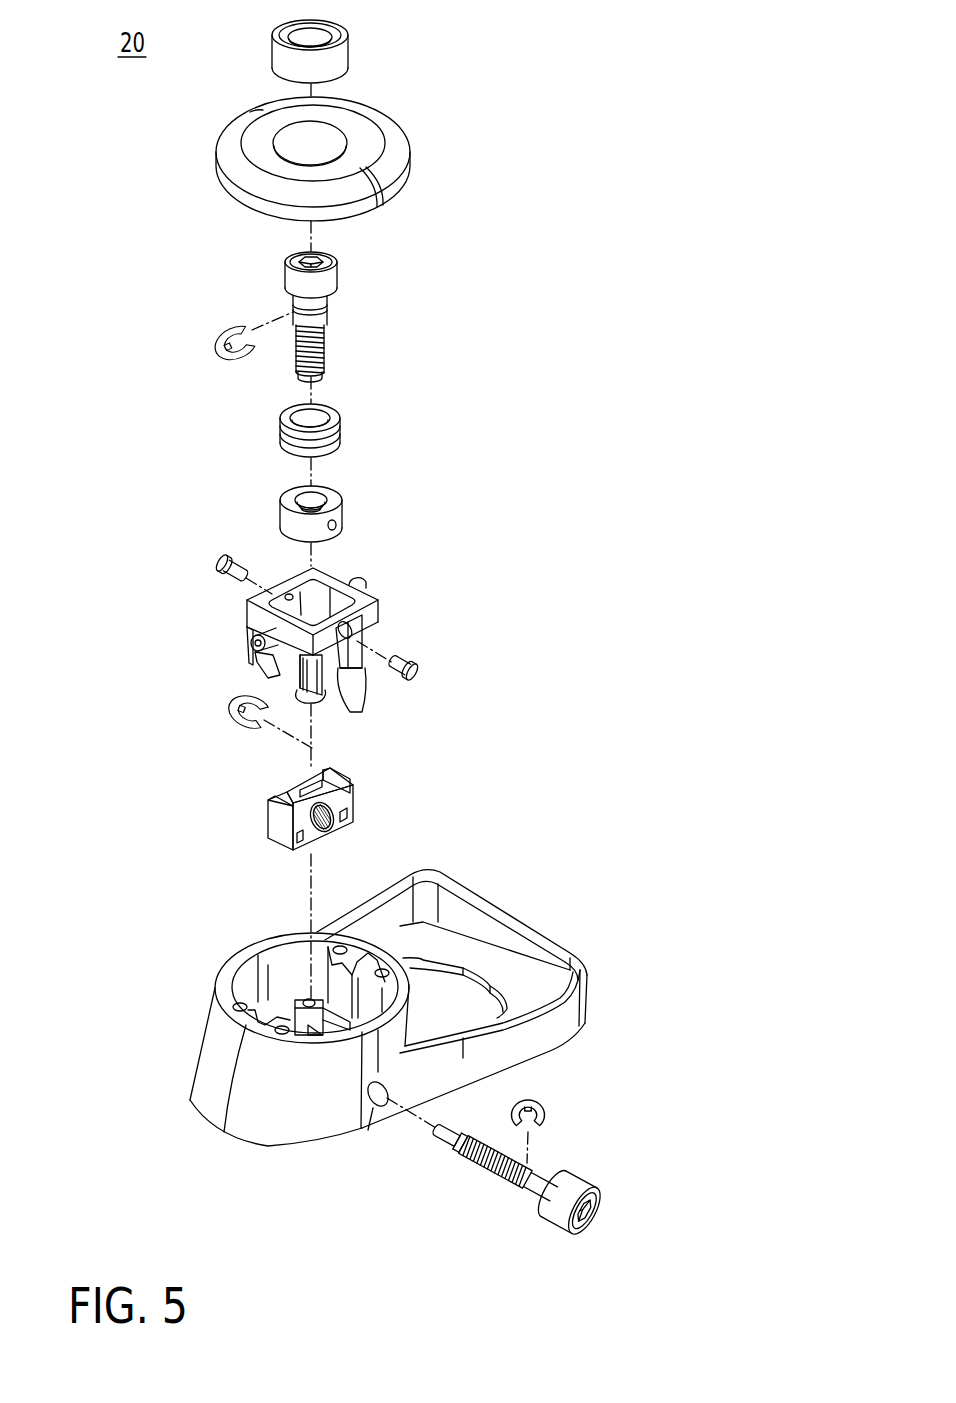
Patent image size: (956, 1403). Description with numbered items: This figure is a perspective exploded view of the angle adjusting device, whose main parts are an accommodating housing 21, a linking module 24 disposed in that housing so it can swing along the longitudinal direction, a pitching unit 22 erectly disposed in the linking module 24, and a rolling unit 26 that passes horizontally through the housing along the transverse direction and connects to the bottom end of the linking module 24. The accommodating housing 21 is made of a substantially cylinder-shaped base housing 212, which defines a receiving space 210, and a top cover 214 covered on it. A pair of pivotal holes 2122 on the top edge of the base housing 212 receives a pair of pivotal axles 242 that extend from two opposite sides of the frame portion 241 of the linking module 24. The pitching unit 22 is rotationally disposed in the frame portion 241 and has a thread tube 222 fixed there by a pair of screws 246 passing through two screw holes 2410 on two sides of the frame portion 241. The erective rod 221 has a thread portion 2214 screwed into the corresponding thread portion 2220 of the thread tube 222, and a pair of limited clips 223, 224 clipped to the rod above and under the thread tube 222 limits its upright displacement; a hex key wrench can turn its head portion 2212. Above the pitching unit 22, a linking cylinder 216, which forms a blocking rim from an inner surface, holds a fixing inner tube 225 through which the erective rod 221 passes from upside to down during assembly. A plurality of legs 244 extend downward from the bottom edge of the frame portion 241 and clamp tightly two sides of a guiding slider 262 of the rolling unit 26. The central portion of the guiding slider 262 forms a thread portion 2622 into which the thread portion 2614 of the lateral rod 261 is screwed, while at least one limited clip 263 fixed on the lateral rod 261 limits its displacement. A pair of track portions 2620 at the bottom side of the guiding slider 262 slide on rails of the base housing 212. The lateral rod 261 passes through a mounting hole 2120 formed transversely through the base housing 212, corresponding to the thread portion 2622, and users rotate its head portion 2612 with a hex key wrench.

The accommodating housing 21 is at (381, 1012).
The pitching unit 22 is at (452, 275).
The linking module 24 is at (493, 572).
The rolling unit 26 is at (640, 1127).
The receiving space 210 is at (280, 963).
The base housing 212 is at (270, 1133).
The top cover 214 is at (395, 167).
The linking cylinder 216 is at (350, 50).
The erective rod 221 is at (369, 317).
The thread tube 222 is at (357, 499).
The limited clip 223 is at (233, 332).
The limited clip 224 is at (226, 723).
The fixing inner tube 225 is at (341, 428).
The frame portion 241 is at (358, 640).
The pivotal axles 242 is at (365, 582).
The legs 244 is at (350, 673).
The screws 246 is at (218, 560).
The lateral rod 261 is at (522, 1203).
The guiding slider 262 is at (370, 825).
The limited clip 263 is at (542, 1118).
The mounting hole 2120 is at (372, 1108).
The pivotal holes 2122 is at (245, 1010).
The head portion 2212 is at (337, 270).
The thread portion 2214 is at (326, 360).
The thread portion 2220 is at (318, 500).
The screw holes 2410 is at (352, 633).
The head portion 2612 is at (584, 1211).
The thread portion 2614 is at (496, 1162).
The track portions 2620 is at (350, 821).
The thread portion 2622 is at (325, 820).